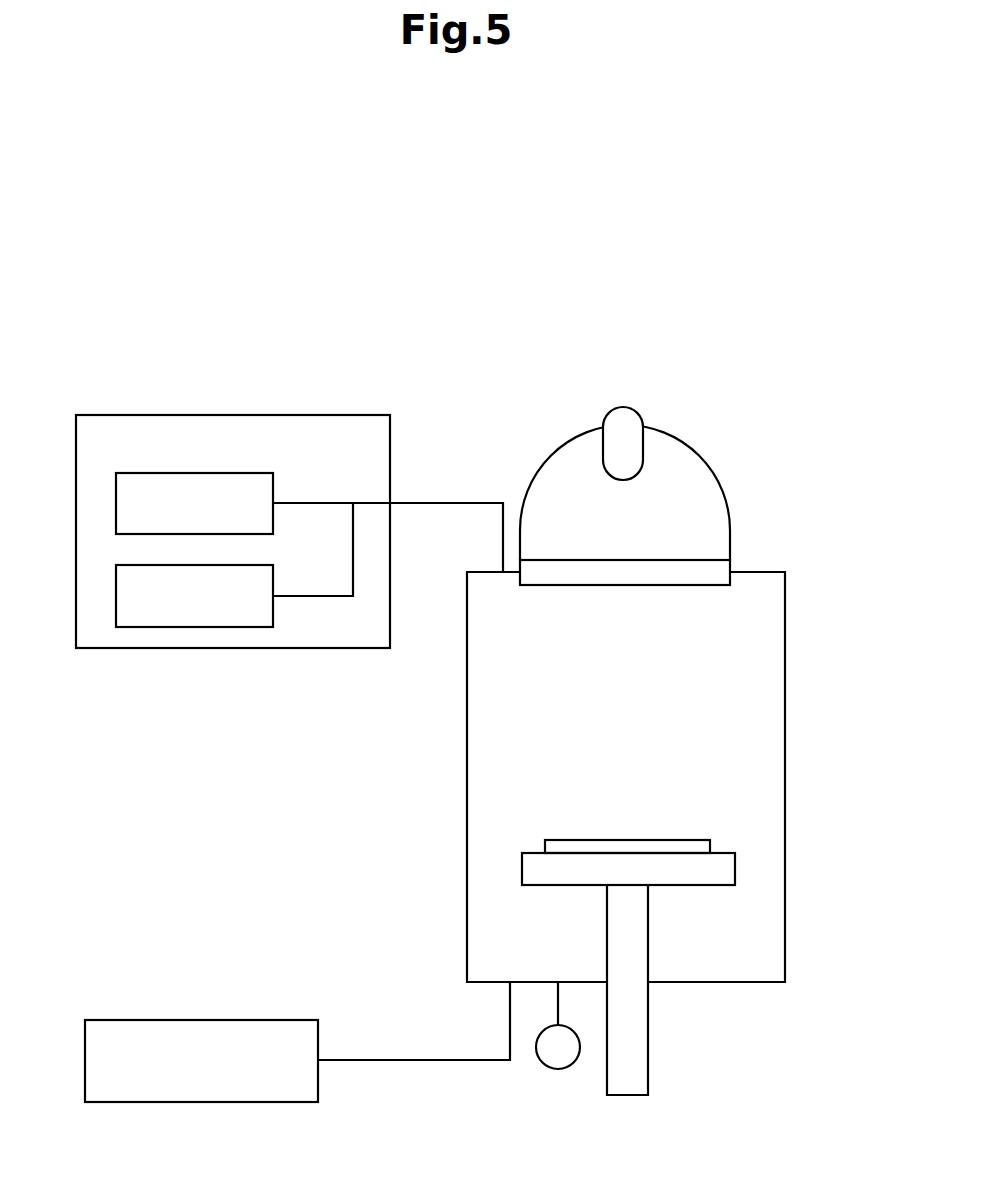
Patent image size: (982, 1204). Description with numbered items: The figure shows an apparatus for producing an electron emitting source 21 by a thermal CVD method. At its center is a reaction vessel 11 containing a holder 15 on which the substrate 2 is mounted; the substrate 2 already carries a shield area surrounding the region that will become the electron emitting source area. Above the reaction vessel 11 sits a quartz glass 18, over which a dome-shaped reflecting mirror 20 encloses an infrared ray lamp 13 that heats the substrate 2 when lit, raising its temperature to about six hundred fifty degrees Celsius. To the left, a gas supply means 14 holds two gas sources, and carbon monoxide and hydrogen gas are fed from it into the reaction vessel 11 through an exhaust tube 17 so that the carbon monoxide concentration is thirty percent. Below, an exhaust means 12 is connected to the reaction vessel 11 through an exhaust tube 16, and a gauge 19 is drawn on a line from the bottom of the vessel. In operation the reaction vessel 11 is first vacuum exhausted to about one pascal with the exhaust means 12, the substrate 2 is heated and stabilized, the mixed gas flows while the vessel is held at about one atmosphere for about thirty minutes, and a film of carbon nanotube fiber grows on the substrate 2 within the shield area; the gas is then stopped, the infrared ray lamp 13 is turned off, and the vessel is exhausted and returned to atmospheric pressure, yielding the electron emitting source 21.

The substrate 2 is at (545, 843).
The reaction vessel 11 is at (468, 762).
The exhaust means 12 is at (142, 1020).
The infrared ray lamp 13 is at (643, 415).
The gas supply means 14 is at (223, 648).
The holder 15 is at (577, 880).
The exhaust tube 16 is at (410, 1060).
The exhaust tube 17 is at (445, 502).
The quartz glass 18 is at (730, 567).
The pressure gauge 19 is at (545, 1067).
The reflecting mirror 20 is at (713, 482).
The electron emitting source 21 is at (648, 390).